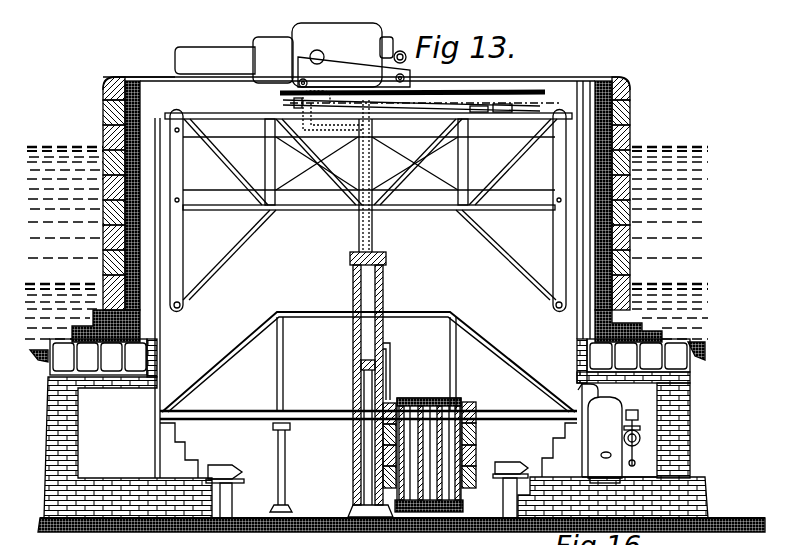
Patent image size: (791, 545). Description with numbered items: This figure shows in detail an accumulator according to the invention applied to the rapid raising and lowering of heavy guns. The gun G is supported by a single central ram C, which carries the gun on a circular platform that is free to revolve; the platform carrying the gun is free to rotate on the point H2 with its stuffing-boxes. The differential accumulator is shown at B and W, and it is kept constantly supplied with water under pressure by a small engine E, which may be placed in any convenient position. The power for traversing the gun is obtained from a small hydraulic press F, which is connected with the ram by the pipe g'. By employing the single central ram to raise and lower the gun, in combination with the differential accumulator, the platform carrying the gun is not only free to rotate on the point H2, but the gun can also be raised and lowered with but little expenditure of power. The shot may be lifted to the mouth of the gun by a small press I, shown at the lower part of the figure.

The gun G is at (412, 71).
The point of rotation H2 is at (294, 103).
The pipe g' is at (425, 171).
The hydraulic press F is at (411, 99).
The ram C is at (377, 241).
The accumulator weight W is at (409, 402).
The accumulator B is at (424, 400).
The engine E is at (609, 433).
The shot-lifting press I is at (367, 490).